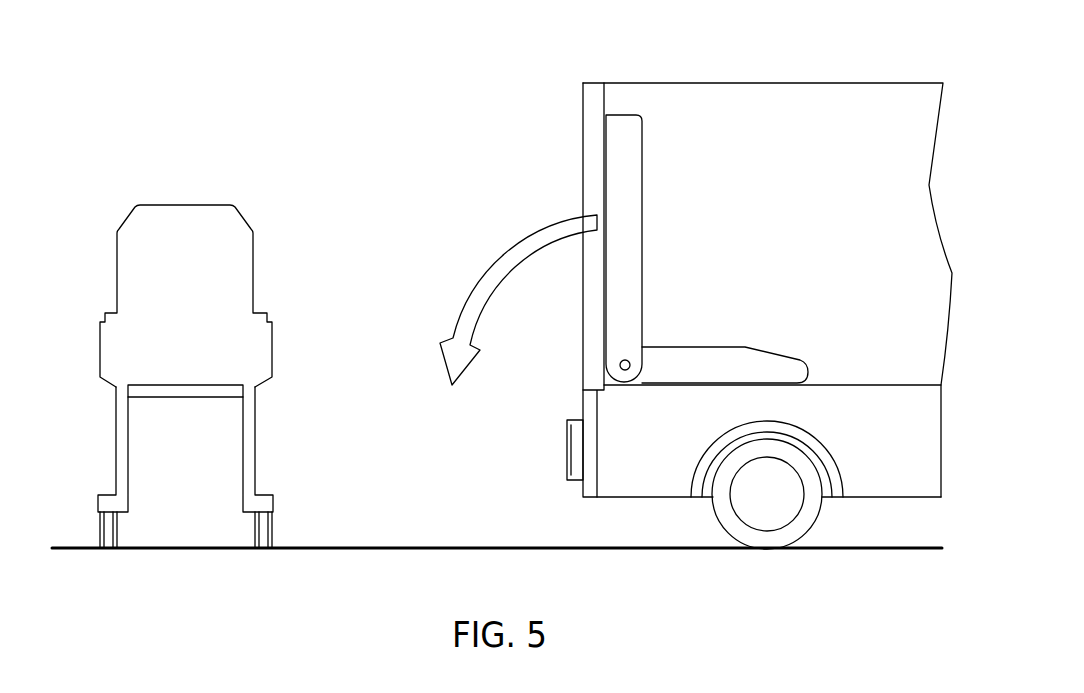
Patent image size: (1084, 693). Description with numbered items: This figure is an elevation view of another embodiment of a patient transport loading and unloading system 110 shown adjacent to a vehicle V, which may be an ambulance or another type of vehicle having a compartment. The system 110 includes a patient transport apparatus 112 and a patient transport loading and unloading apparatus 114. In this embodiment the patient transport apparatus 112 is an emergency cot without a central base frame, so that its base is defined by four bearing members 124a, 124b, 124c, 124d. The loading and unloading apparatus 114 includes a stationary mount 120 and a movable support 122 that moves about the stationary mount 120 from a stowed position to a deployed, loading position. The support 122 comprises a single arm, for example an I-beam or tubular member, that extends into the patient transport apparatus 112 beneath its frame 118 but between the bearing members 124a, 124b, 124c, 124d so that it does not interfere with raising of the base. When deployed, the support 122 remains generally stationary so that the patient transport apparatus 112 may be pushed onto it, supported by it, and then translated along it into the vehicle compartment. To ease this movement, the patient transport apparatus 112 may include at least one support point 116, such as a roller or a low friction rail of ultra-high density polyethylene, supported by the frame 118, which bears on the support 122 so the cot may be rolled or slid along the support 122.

The patient transport loading and unloading system 110 is at (493, 86).
The vehicle V is at (752, 117).
The patient transport apparatus 112 is at (197, 407).
The patient transport loading and unloading apparatus 114 is at (743, 277).
The support point 116 is at (190, 398).
The frame 118 is at (267, 350).
The stationary mount 120 is at (757, 360).
The movable support 122 is at (627, 235).
The bearing member 124a is at (102, 542).
The bearing member 124b is at (262, 542).
The bearing member 124c is at (285, 540).
The bearing member 124d is at (128, 540).